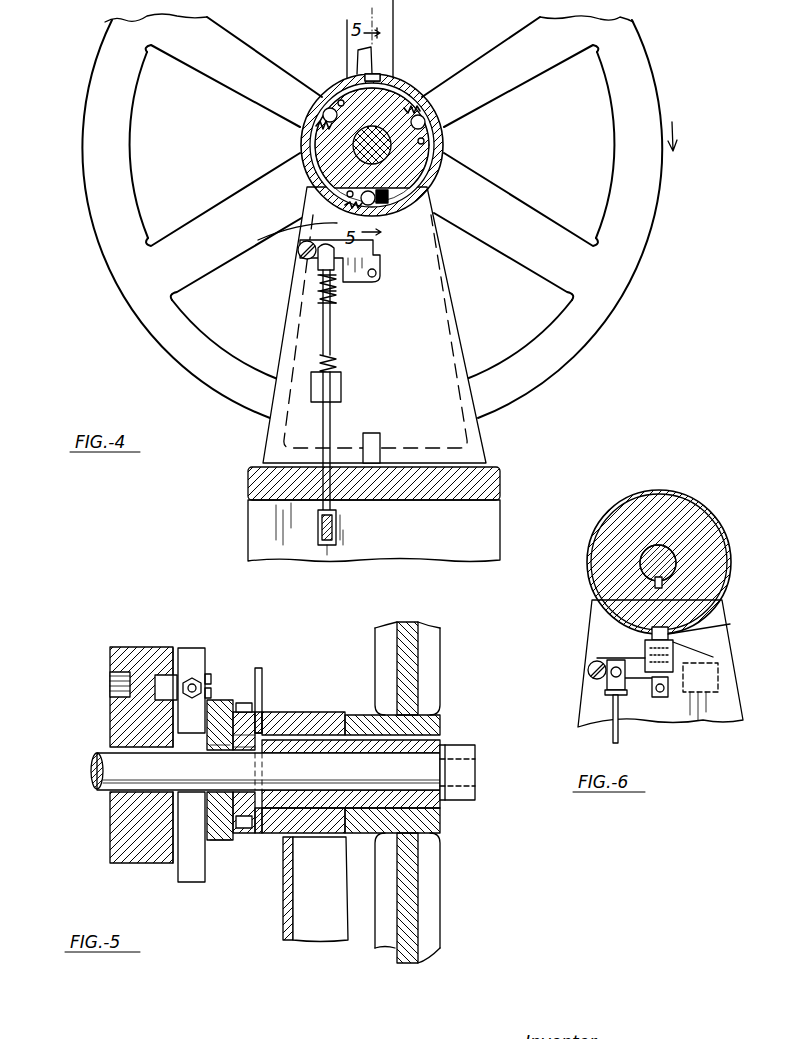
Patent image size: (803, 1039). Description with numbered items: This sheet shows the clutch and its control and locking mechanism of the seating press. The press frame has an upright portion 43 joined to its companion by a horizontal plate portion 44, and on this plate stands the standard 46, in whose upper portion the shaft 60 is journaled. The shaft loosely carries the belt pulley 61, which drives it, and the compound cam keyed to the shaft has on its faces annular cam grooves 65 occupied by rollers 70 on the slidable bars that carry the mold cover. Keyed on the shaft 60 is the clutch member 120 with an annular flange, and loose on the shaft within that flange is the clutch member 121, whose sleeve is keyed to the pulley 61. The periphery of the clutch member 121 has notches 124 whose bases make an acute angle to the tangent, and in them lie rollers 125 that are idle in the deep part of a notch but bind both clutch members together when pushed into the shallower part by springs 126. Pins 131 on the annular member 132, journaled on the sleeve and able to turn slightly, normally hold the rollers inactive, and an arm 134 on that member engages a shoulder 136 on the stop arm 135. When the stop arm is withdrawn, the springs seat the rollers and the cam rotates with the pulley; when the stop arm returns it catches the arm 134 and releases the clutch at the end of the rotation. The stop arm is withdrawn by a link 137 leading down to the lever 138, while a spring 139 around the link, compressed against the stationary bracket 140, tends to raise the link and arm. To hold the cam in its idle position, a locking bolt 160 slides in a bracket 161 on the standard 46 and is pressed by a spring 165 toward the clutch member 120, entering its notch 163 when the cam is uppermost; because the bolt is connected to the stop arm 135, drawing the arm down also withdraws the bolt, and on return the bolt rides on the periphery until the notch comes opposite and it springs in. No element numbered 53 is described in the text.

In FIG. 4, the upright frame portion 43 is at (482, 541).
In FIG. 4, the horizontal plate portion 44 is at (426, 496).
In FIG. 4, the standard 46 is at (372, 325).
In FIG. 5, the standard 46 is at (292, 898).
In FIG. 5, the bearing block 53 is at (120, 842).
In FIG. 4, the shaft 60 is at (425, 152).
In FIG. 5, the shaft 60 is at (97, 765).
In FIG. 6, the shaft 60 is at (664, 557).
In FIG. 4, the belt pulley 61 is at (612, 304).
In FIG. 5, the belt pulley 61 is at (403, 677).
In FIG. 5, the annular cam groove 65 is at (147, 678).
In FIG. 5, the roller 70 is at (163, 680).
In FIG. 4, the clutch member 120 is at (308, 122).
In FIG. 5, the clutch member 120 is at (218, 700).
In FIG. 6, the clutch member 120 is at (628, 607).
In FIG. 5, the clutch member 121 is at (272, 712).
In FIG. 4, the notch 124 is at (416, 96).
In FIG. 4, the roller 125 is at (300, 135).
In FIG. 5, the roller 125 is at (233, 842).
In FIG. 4, the spring 126 is at (428, 101).
In FIG. 4, the pin 131 is at (323, 104).
In FIG. 5, the pin 131 is at (238, 843).
In FIG. 5, the annular member 132 is at (258, 846).
In FIG. 4, the arm 134 is at (358, 57).
In FIG. 5, the arm 134 is at (260, 670).
In FIG. 4, the stop arm 135 is at (298, 245).
In FIG. 6, the stop arm 135 is at (637, 676).
In FIG. 4, the shoulder 136 is at (380, 263).
In FIG. 4, the link 137 is at (331, 420).
In FIG. 6, the link 137 is at (613, 714).
In FIG. 4, the lever 138 is at (338, 541).
In FIG. 4, the spring 139 is at (320, 297).
In FIG. 4, the stationary bracket 140 is at (342, 383).
In FIG. 6, the locking bolt 160 is at (652, 637).
In FIG. 6, the bracket 161 is at (718, 663).
In FIG. 4, the notch 163 is at (375, 80).
In FIG. 5, the notch 163 is at (240, 702).
In FIG. 6, the notch 163 is at (730, 625).
In FIG. 6, the spring 165 is at (672, 656).